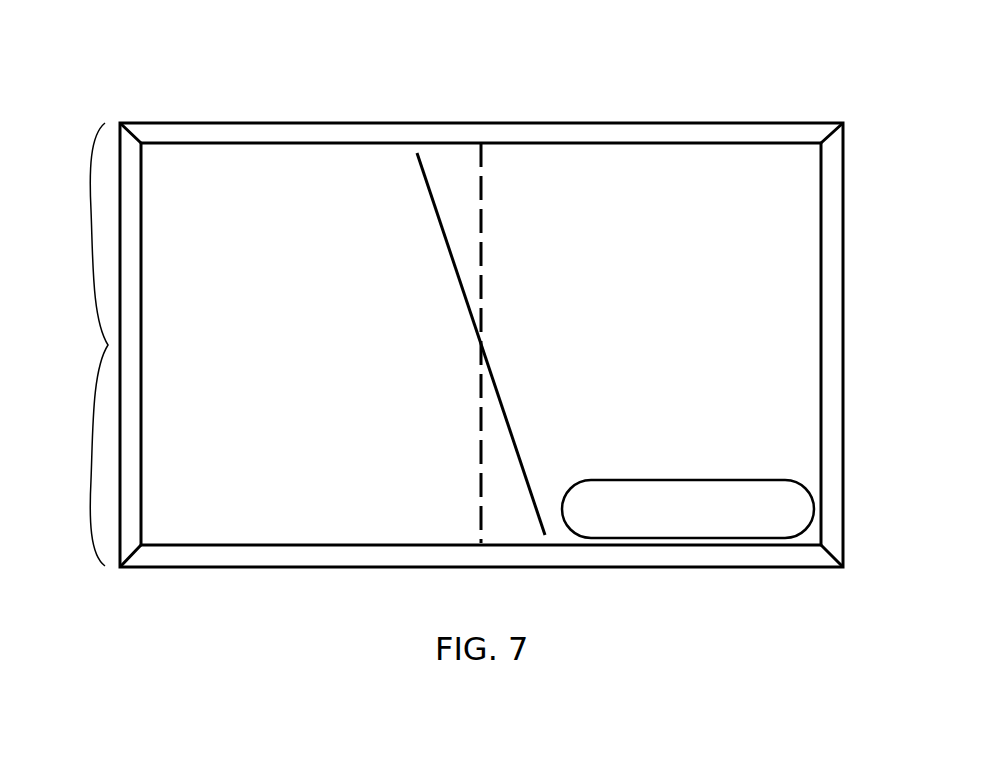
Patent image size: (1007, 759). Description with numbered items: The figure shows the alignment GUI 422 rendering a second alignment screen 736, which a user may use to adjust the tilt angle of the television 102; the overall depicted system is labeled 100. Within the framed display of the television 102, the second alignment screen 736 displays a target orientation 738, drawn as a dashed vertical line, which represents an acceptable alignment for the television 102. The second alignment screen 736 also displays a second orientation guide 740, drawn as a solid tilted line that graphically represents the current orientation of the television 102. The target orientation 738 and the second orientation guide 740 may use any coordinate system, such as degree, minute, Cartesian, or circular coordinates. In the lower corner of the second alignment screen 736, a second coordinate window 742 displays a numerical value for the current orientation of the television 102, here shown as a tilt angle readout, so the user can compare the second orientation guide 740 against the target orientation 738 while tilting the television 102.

The display device 100 is at (124, 86).
The television 102 is at (843, 172).
The alignment GUI 422 is at (186, 168).
The second alignment screen 736 is at (82, 344).
The target orientation 738 is at (483, 264).
The second orientation guide 740 is at (432, 186).
The second coordinate window 742 is at (742, 538).